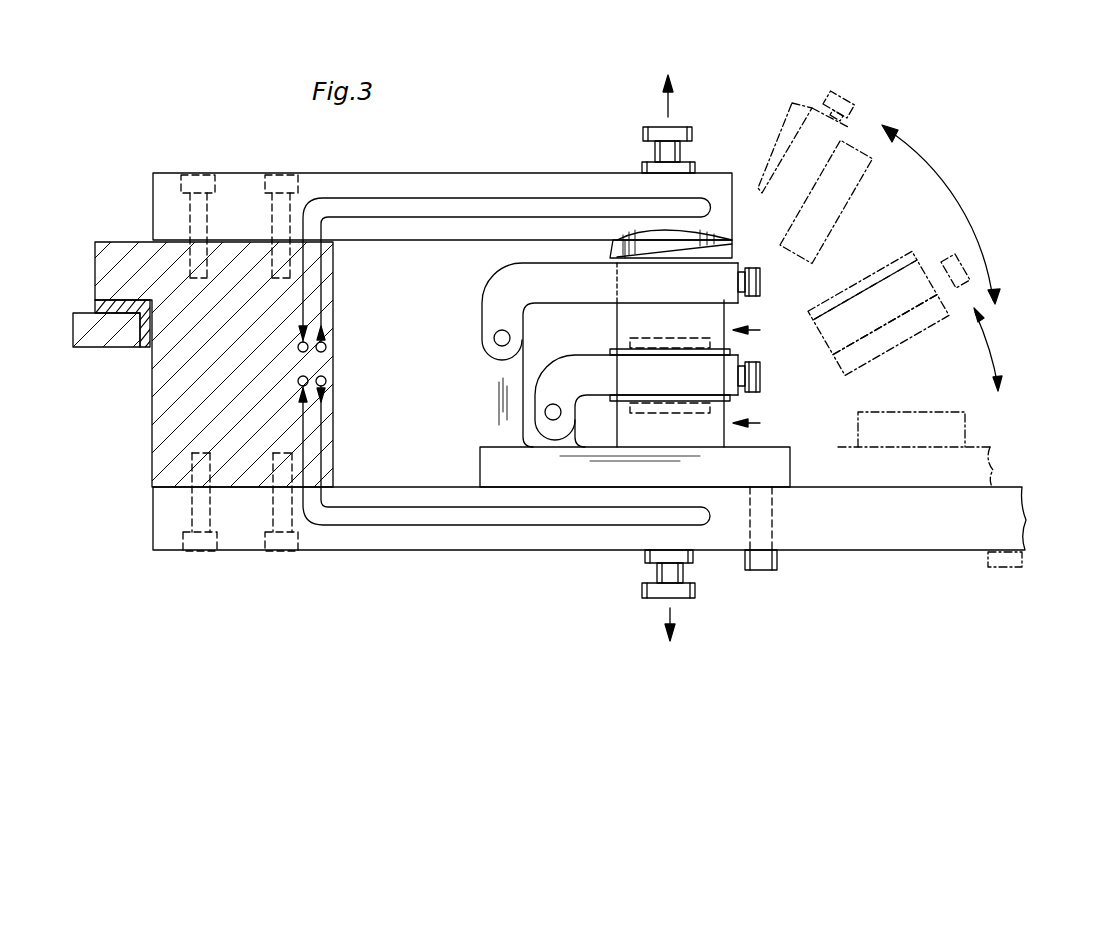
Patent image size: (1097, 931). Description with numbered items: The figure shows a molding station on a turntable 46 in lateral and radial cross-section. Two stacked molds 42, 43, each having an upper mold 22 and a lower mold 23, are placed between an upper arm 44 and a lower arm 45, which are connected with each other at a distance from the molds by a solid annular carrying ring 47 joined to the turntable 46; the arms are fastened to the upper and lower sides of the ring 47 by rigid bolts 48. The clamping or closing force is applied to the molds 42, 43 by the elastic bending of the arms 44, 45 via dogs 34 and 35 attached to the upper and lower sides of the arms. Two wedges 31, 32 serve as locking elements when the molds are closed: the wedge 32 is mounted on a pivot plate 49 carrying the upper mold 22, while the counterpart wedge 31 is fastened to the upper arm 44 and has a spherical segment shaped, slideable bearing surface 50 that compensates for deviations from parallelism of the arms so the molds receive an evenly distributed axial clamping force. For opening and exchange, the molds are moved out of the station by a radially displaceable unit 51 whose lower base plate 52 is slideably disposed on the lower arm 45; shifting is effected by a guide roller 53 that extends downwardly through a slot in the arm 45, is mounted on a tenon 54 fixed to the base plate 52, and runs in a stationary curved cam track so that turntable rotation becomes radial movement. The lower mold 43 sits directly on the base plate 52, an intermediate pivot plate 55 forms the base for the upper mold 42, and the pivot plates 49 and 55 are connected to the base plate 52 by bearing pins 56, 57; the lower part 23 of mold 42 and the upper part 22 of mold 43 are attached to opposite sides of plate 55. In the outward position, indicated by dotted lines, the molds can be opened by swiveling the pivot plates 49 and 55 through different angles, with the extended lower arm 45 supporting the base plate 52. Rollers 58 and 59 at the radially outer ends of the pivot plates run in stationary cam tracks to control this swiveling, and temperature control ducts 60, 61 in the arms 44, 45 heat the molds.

The upper mold 22 is at (700, 315).
The lower mold 23 is at (625, 345).
The counterpart wedge 31 is at (682, 240).
The wedge 32 is at (788, 125).
The dog 34 is at (643, 133).
The dog 35 is at (675, 588).
The upper mold 42 is at (766, 327).
The lower mold 43 is at (774, 416).
The upper arm 44 is at (547, 190).
The lower arm 45 is at (560, 540).
The turntable 46 is at (93, 362).
The carrying ring 47 is at (182, 432).
The rigid bolts 48 is at (276, 215).
The pivot plate 49 is at (515, 278).
The bearing surface 50 is at (612, 246).
The radially displaceable unit 51 is at (462, 423).
The base plate 52 is at (770, 463).
The guide roller 53 is at (762, 562).
The tenon 54 is at (772, 525).
The intermediate pivot plate 55 is at (693, 373).
The bearing pin 56 is at (494, 338).
The bearing pin 57 is at (545, 410).
The roller 58 is at (762, 282).
The roller 59 is at (762, 378).
The temperature control duct 60 is at (445, 210).
The temperature control duct 61 is at (448, 518).